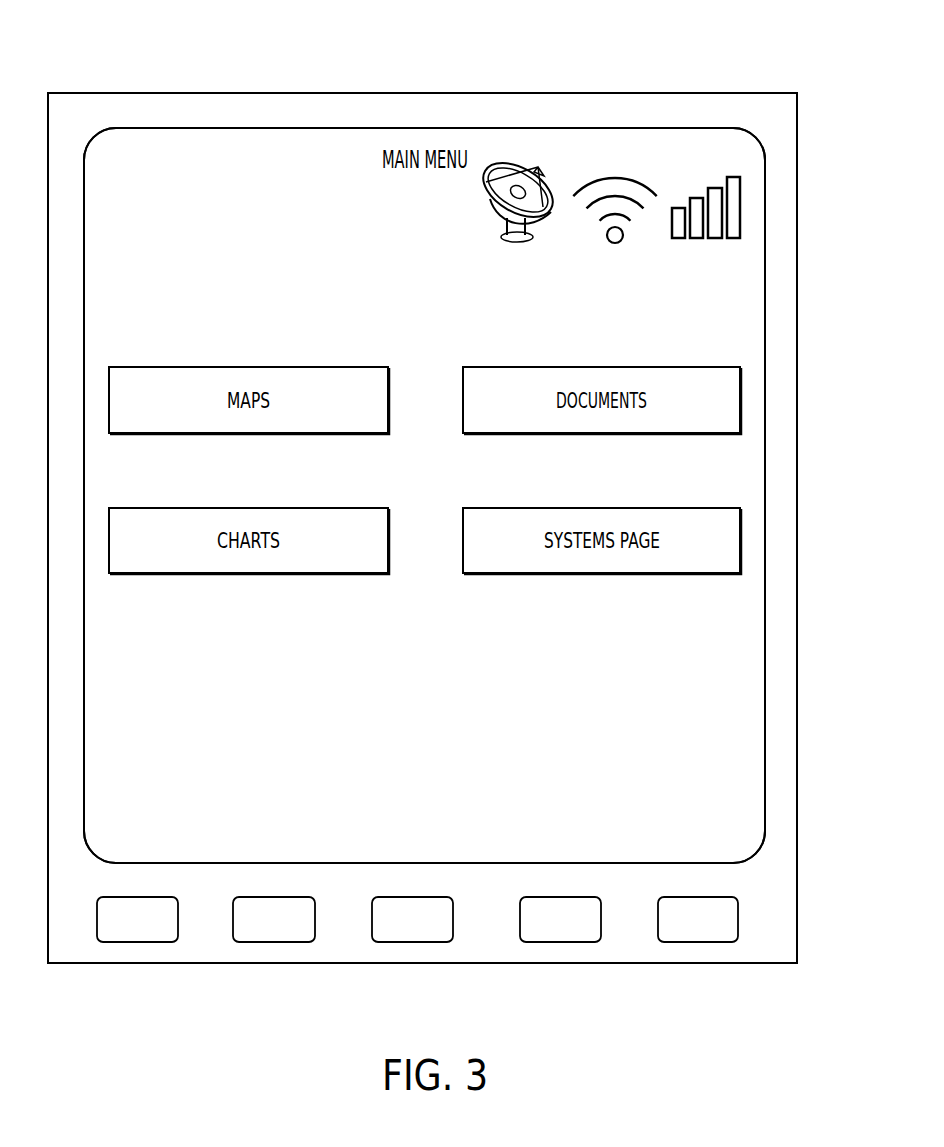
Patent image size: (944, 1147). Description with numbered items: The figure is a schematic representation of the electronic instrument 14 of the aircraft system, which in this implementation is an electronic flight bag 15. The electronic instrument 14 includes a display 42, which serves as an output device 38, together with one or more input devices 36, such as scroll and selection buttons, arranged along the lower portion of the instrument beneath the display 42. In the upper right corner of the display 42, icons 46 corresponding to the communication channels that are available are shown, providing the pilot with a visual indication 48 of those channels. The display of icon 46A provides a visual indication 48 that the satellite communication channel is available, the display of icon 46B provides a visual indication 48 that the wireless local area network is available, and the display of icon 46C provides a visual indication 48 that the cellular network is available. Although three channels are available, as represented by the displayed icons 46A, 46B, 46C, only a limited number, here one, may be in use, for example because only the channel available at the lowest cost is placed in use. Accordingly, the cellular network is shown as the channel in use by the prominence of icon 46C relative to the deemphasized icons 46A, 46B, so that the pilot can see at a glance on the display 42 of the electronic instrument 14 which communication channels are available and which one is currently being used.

The electronic instrument 14 is at (551, 92).
The electronic flight bag 15 is at (797, 638).
The input devices 36 is at (135, 942).
The output device 38 is at (765, 192).
The display 42 is at (765, 237).
The icons 46 is at (671, 146).
The satellite communication channel icon 46A is at (515, 244).
The wireless local area network icon 46B is at (614, 244).
The cellular network icon 46C is at (700, 244).
The visual indication 48 is at (452, 215).